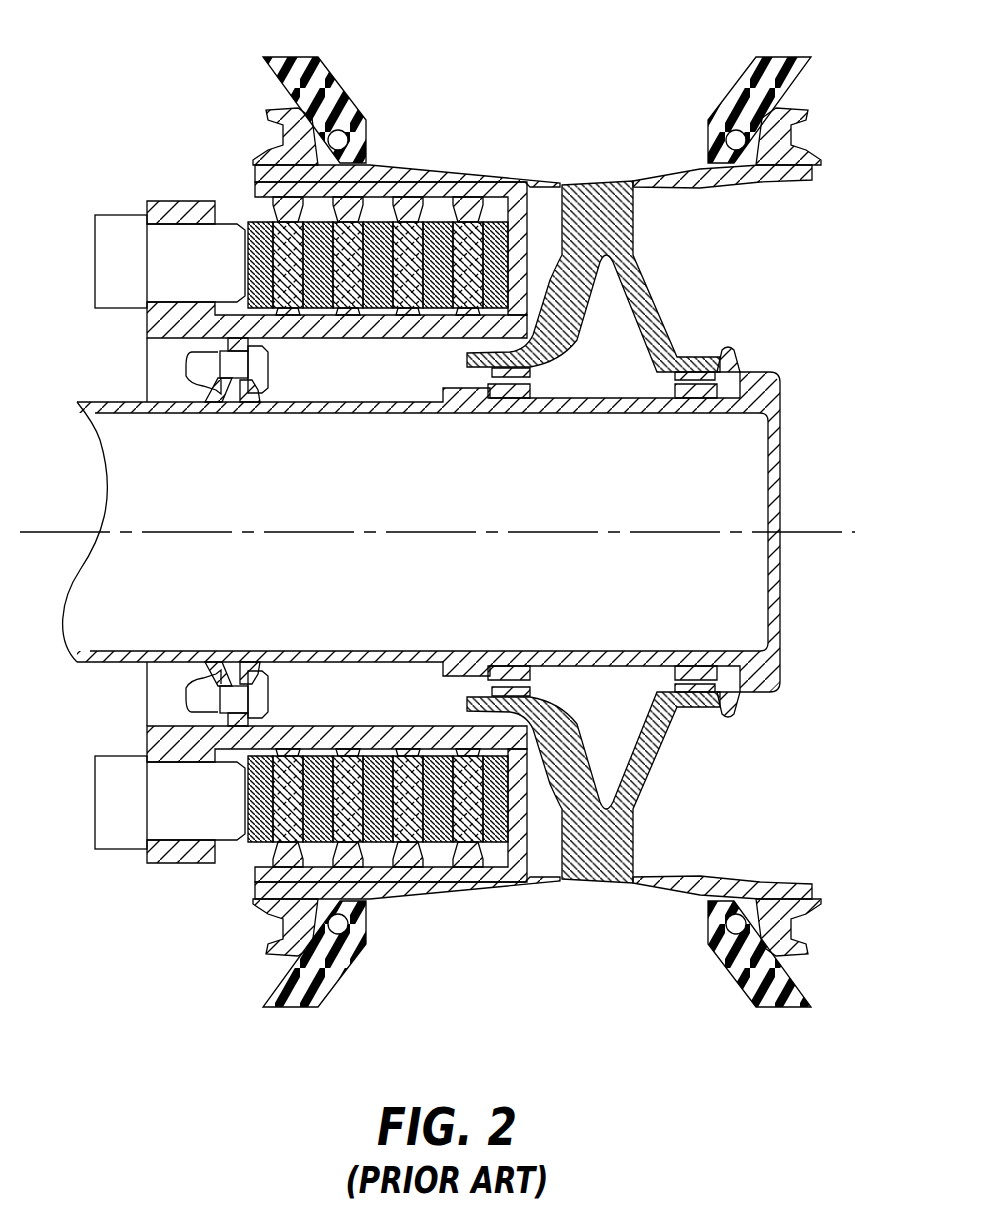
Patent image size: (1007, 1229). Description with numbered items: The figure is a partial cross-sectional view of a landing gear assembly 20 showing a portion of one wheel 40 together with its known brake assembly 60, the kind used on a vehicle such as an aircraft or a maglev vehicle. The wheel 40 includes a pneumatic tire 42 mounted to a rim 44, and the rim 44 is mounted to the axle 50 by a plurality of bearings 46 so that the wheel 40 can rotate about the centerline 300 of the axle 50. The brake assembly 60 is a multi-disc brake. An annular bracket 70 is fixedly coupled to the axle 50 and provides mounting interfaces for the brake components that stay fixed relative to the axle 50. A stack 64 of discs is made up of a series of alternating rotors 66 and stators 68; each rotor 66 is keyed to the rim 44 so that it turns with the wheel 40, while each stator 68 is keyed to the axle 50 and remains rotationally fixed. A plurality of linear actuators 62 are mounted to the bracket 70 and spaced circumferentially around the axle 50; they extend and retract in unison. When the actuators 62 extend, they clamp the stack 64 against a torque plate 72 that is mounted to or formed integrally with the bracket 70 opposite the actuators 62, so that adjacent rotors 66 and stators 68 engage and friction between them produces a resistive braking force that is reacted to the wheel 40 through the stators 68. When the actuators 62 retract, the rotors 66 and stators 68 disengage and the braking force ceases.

The landing gear assembly 20 is at (783, 765).
The wheel 40 is at (815, 83).
The pneumatic tire 42 is at (272, 84).
The rim 44 is at (653, 305).
The bearings 46 is at (735, 366).
The axle 50 is at (105, 690).
The brake assembly 60 is at (175, 886).
The actuators 62 is at (172, 245).
The stack 64 is at (237, 213).
The rotors 66 is at (470, 232).
The stators 68 is at (258, 228).
The annular bracket 70 is at (160, 323).
The torque plate 72 is at (548, 240).
The centerline 300 is at (808, 522).